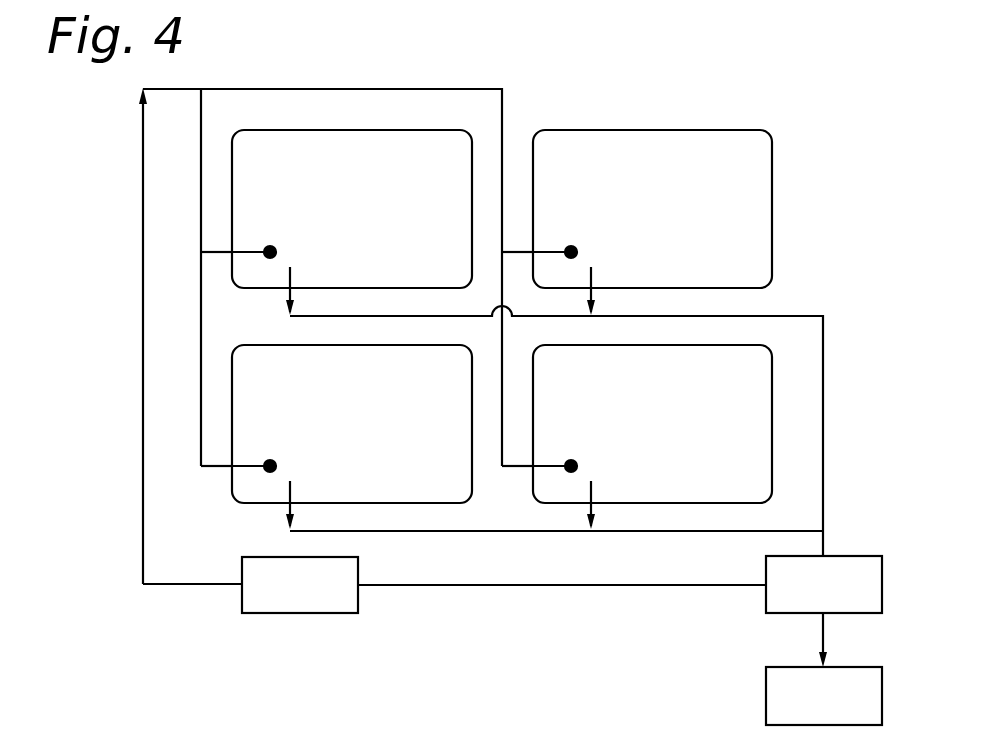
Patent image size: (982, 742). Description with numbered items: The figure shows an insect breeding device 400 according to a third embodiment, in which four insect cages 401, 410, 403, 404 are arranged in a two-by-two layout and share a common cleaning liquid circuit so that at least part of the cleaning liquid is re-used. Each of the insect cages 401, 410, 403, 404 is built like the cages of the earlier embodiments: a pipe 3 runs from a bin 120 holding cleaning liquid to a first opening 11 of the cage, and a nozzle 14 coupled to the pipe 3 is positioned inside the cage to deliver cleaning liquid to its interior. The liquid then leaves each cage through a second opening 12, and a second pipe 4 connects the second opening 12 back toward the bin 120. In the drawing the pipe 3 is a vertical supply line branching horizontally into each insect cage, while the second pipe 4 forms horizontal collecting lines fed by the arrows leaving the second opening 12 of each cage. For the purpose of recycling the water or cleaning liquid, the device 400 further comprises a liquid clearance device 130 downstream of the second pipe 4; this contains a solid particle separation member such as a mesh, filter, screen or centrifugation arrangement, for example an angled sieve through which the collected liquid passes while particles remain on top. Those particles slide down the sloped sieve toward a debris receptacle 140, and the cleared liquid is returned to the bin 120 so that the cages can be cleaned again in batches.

The insect breeding device 400 is at (805, 106).
The insect cage 401 is at (352, 209).
The insect cage 410 is at (652, 209).
The insect cage 403 is at (352, 424).
The insect cage 404 is at (652, 424).
The pipe 3 is at (220, 253).
The second pipe 4 is at (288, 300).
The first opening 11 is at (233, 252).
The nozzle 14 is at (276, 246).
The second opening 12 is at (292, 288).
The bin 120 is at (250, 585).
The liquid clearance device 130 is at (620, 584).
The debris receptacle 140 is at (824, 669).